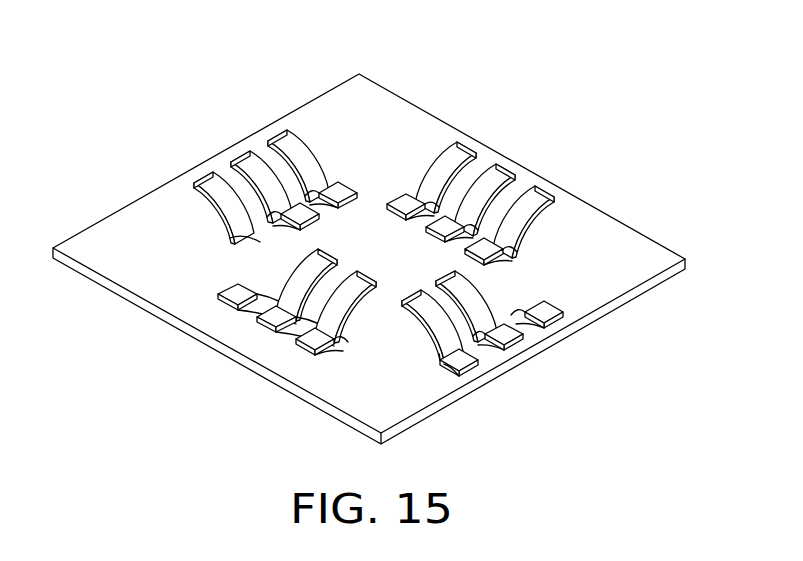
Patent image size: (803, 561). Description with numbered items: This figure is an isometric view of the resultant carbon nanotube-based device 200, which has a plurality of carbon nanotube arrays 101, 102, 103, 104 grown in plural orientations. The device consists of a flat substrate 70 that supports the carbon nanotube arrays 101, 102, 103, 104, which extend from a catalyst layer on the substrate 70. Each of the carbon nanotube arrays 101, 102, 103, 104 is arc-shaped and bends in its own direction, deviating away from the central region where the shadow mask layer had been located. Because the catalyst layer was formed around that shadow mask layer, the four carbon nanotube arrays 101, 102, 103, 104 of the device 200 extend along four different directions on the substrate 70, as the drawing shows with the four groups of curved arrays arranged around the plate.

The electrical connector 200 is at (360, 54).
The substrate 70 is at (597, 223).
The carbon nanotube array 101 is at (462, 160).
The carbon nanotube array 102 is at (405, 208).
The carbon nanotube array 103 is at (353, 285).
The carbon nanotube array 104 is at (225, 292).